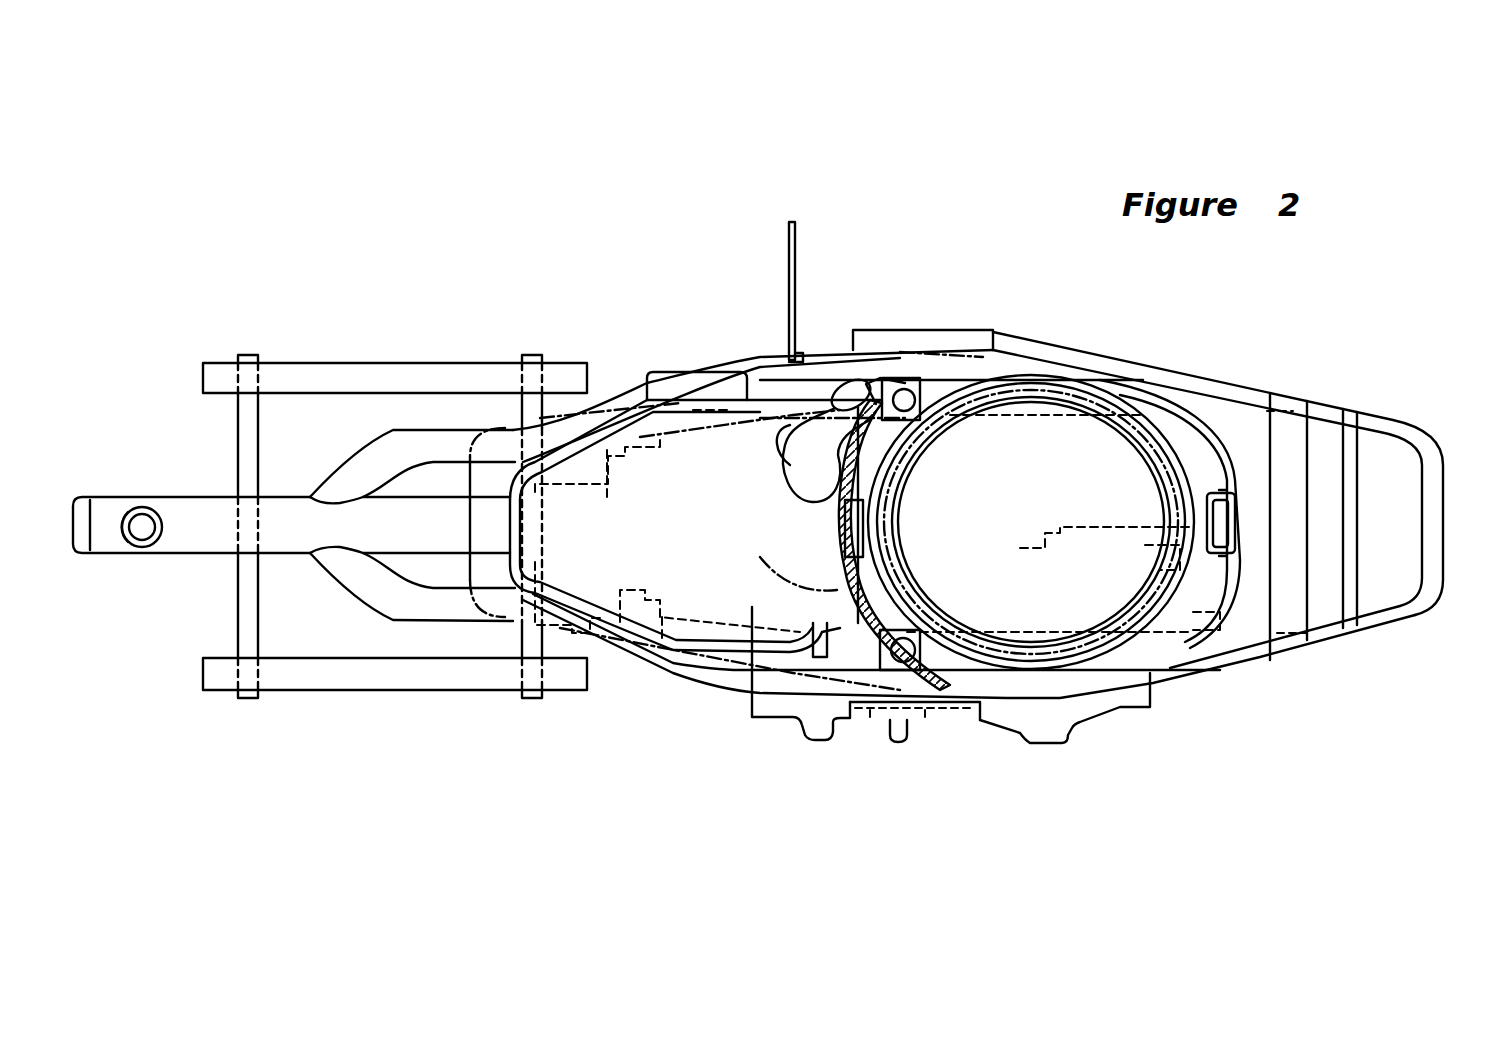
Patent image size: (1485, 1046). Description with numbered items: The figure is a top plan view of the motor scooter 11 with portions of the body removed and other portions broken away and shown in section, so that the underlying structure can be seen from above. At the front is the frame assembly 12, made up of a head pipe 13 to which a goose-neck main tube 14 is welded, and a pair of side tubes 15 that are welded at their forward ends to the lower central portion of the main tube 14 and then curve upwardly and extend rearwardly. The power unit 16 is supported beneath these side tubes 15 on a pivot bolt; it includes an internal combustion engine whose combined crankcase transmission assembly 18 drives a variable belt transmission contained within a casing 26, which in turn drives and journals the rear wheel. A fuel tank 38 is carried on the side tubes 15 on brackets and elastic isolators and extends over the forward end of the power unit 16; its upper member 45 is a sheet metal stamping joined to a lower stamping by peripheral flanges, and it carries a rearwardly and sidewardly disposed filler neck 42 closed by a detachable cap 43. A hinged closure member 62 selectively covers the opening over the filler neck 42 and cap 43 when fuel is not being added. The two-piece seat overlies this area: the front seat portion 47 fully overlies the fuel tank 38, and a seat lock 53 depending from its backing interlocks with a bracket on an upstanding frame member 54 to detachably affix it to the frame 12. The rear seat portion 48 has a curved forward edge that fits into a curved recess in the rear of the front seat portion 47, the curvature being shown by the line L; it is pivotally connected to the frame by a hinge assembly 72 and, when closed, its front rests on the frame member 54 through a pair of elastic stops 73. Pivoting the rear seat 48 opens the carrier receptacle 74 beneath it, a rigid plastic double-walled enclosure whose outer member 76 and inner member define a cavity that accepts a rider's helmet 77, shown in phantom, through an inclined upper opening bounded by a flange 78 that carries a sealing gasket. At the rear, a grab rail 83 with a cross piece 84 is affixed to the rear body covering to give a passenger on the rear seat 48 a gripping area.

The motor scooter 11 is at (474, 280).
The frame assembly 12 is at (176, 448).
The head pipe 13 is at (107, 540).
The main tube 14 is at (226, 505).
The side tubes 15 is at (420, 427).
The power unit 16 is at (788, 738).
The combined crankcase transmission assembly 18 is at (752, 688).
The casing 26 is at (1052, 745).
The fuel tank 38 is at (588, 428).
The filler neck 42 is at (825, 410).
The detachable cap 43 is at (849, 390).
The upper member 45 is at (665, 445).
The front seat portion 47 is at (613, 378).
The rear seat portion 48 is at (1051, 352).
The seat lock 53 is at (837, 513).
The upstanding frame member 54 is at (917, 464).
The closure member 62 is at (787, 247).
The hinge assembly 72 is at (1235, 515).
The elastic stops 73 is at (948, 360).
The carrier receptacle 74 is at (1205, 440).
The outer member 76 is at (1127, 437).
The rider's helmet 77 is at (1077, 347).
The flange 78 is at (1030, 387).
The grab rail 83 is at (1260, 675).
The cross piece 84 is at (1310, 590).